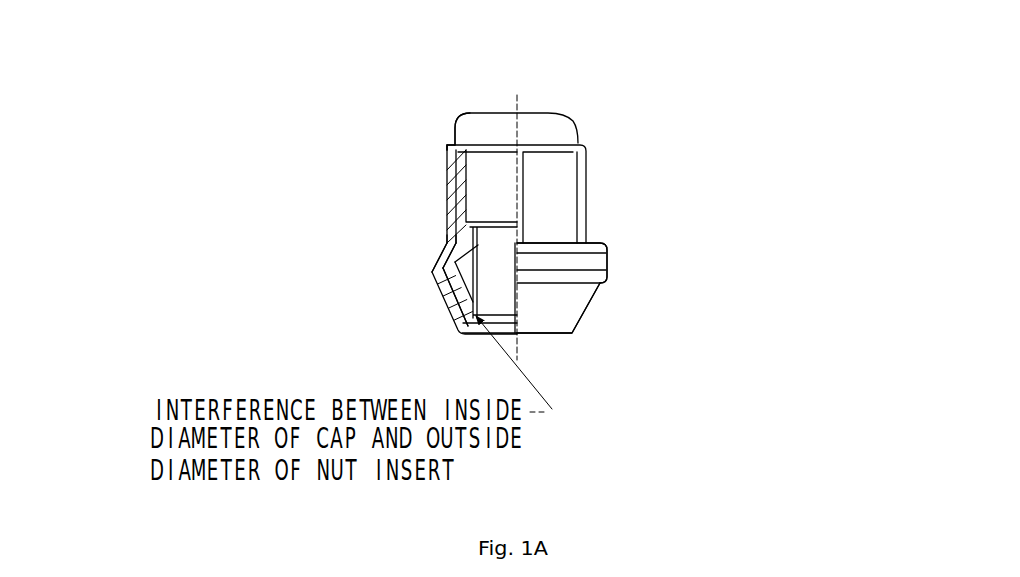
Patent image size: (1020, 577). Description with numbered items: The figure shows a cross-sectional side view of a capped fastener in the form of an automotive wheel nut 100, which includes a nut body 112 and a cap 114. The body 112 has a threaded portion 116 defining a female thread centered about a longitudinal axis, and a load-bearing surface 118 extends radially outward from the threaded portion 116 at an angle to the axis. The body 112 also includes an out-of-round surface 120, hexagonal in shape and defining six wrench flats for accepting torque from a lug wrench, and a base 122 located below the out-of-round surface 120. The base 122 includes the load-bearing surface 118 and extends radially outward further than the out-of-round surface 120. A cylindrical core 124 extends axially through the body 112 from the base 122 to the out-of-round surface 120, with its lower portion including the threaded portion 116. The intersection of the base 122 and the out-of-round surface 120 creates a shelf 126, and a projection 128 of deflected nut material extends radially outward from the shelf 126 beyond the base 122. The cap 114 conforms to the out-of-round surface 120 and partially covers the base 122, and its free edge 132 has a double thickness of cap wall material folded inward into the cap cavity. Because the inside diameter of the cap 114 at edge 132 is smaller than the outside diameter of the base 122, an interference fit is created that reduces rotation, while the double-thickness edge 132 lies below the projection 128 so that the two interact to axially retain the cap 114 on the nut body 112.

The automotive wheel nut 100 is at (393, 97).
The nut body 112 is at (562, 302).
The cap 114 is at (555, 128).
The threaded portion 116 is at (507, 287).
The load-bearing surface 118 is at (573, 295).
The out-of-round surface 120 is at (458, 168).
The base 122 is at (452, 260).
The cylindrical core 124 is at (522, 292).
The shelf 126 is at (443, 243).
The projection 128 is at (428, 248).
The free edge 132 is at (423, 265).